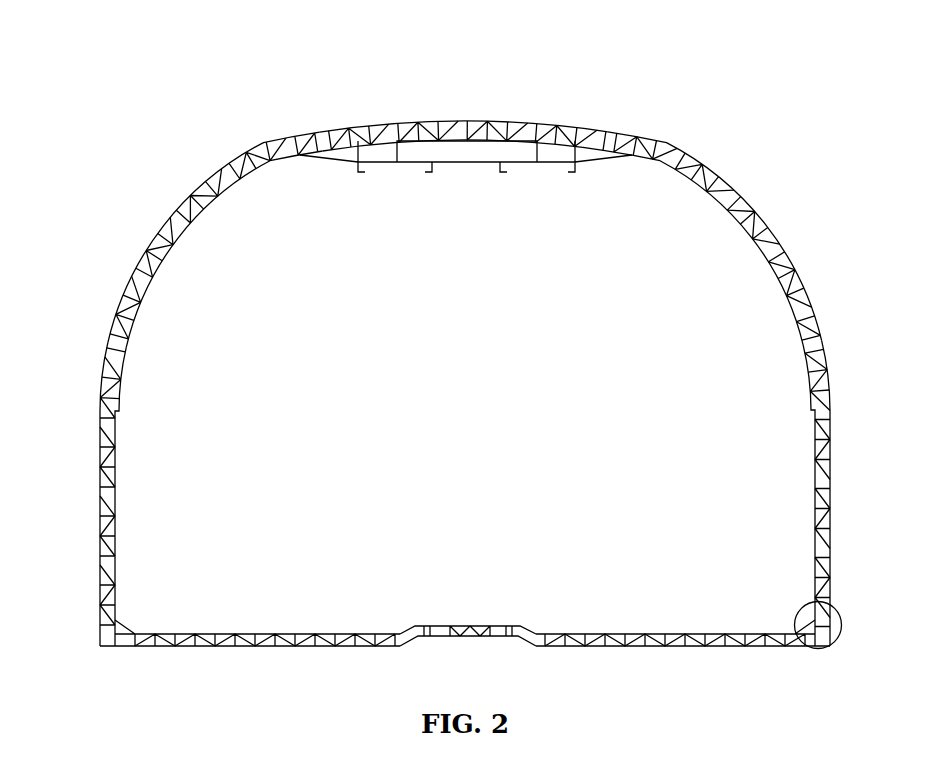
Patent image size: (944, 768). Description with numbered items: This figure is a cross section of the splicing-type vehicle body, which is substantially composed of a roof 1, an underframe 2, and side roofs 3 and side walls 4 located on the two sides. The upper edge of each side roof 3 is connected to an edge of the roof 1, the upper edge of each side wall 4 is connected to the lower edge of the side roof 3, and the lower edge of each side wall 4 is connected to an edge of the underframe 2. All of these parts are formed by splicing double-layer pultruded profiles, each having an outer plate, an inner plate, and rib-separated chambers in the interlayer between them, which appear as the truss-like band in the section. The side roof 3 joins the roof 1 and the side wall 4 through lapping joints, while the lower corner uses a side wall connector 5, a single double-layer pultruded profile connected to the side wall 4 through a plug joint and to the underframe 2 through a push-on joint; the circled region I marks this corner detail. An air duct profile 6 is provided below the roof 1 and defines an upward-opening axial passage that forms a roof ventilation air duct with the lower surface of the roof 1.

The roof 1 is at (485, 121).
The underframe 2 is at (470, 626).
The side roof 3 is at (197, 190).
The side wall 4 is at (108, 425).
The side wall connector 5 is at (100, 632).
The air duct profile 6 is at (468, 165).
The detail region I is at (797, 612).